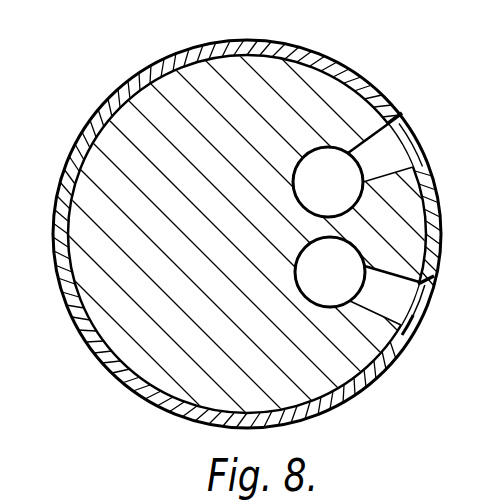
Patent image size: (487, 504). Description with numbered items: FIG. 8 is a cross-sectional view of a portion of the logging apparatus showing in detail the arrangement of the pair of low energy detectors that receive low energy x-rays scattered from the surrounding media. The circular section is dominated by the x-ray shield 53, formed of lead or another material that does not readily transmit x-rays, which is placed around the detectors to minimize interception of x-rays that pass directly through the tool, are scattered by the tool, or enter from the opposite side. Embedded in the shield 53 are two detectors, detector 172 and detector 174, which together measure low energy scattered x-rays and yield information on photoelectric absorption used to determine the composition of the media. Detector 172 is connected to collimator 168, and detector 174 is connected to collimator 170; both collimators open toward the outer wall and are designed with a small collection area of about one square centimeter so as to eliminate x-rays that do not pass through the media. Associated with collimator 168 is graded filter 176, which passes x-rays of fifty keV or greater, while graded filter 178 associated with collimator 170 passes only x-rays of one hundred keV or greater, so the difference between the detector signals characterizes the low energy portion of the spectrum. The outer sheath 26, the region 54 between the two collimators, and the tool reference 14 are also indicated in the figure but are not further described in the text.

The tubular outer wall 26 is at (362, 80).
The x-ray shield 53 is at (268, 230).
The collimator 170 is at (404, 117).
The graded filter 178 is at (428, 149).
The detector 172 is at (352, 199).
The body portion between channels 54 is at (380, 236).
The detector 174 is at (352, 266).
The graded filter 176 is at (428, 297).
The collimator 168 is at (408, 342).
The catheter 14 is at (482, 464).